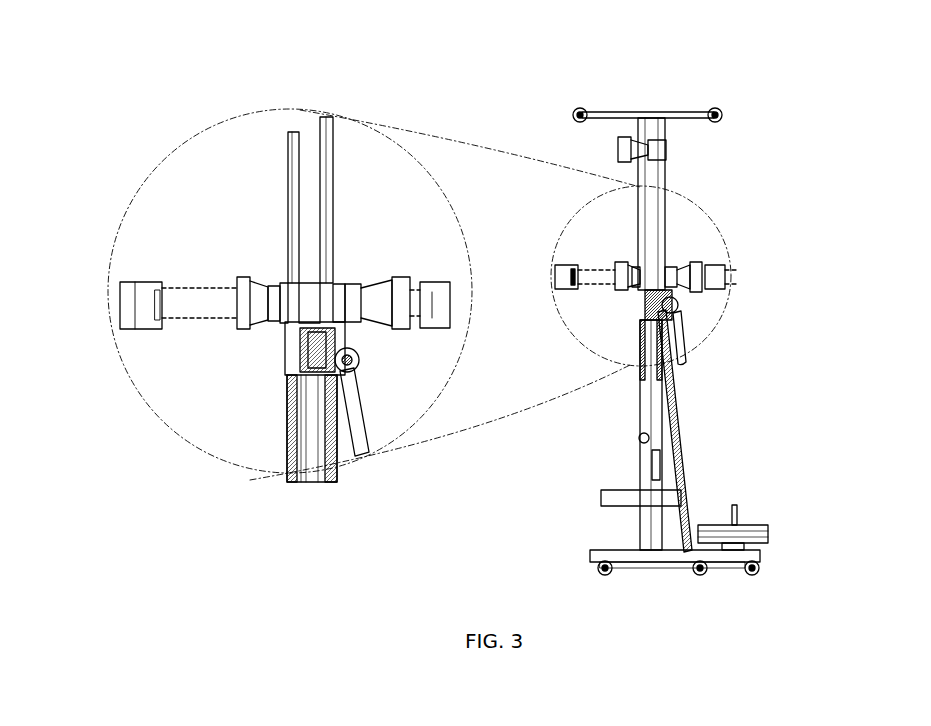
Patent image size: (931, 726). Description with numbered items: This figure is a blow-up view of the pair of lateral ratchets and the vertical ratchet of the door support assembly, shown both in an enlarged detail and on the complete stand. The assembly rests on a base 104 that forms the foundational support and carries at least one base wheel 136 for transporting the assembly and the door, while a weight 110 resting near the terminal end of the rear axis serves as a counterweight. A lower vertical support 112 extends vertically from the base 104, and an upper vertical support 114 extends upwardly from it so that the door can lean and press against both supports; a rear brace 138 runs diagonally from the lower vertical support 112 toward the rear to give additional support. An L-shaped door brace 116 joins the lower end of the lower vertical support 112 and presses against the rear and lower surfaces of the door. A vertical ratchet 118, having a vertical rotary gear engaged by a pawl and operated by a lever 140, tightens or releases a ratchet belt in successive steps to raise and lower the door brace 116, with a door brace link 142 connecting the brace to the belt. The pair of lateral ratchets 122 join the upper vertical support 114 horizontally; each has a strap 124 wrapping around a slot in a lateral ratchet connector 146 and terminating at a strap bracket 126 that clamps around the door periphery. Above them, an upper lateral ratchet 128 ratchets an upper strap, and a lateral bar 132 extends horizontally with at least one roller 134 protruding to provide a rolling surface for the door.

The base 104 is at (660, 565).
The weight 110 is at (768, 524).
The lower vertical support 112 is at (288, 480).
The upper vertical support 114 is at (338, 162).
The door brace 116 is at (603, 502).
The vertical ratchet 118 is at (318, 378).
The lateral ratchet 122 is at (246, 277).
The strap 124 is at (217, 320).
The strap bracket 126 is at (128, 318).
The upper lateral ratchet 128 is at (629, 118).
The lateral bar 132 is at (675, 112).
The roller 134 is at (585, 110).
The base wheel 136 is at (760, 570).
The rear brace 138 is at (690, 452).
The lever 140 is at (362, 456).
The door brace link 142 is at (642, 445).
The lateral ratchet connector 146 is at (284, 283).